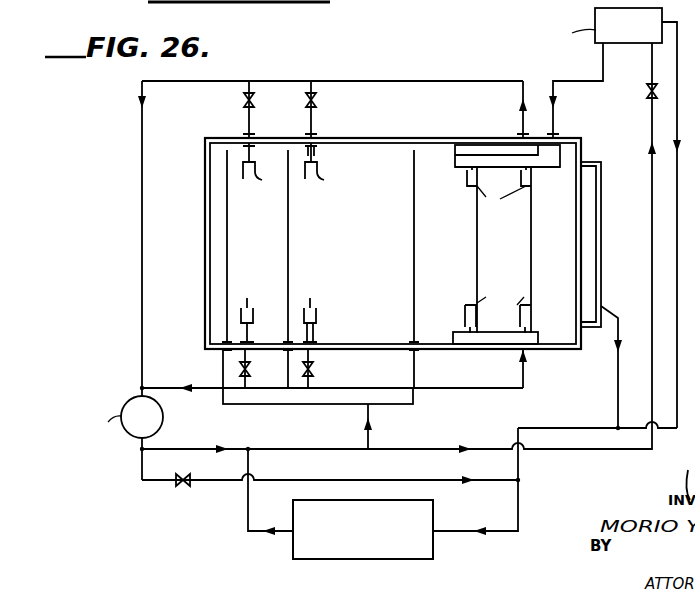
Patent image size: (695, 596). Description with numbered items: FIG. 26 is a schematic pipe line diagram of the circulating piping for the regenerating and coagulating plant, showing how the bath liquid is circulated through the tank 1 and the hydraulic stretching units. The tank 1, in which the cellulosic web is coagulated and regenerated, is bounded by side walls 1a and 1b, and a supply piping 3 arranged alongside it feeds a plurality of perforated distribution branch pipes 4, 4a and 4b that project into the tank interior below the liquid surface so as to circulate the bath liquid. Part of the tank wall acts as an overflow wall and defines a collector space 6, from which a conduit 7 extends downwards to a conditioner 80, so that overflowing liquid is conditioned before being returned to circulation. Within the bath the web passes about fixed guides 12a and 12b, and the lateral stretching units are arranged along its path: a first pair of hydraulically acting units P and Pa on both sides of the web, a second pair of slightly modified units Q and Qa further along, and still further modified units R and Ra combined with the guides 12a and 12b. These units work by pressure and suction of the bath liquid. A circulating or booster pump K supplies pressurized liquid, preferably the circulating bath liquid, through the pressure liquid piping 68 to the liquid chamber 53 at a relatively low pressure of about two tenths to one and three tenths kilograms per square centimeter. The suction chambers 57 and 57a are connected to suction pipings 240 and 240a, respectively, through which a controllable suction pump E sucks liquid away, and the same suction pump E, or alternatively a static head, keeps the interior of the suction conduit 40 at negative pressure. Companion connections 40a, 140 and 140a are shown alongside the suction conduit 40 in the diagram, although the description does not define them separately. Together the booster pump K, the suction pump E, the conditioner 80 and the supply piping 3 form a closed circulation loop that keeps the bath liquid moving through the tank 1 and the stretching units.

The tank 1 is at (390, 272).
The side wall 1a is at (382, 140).
The side wall 1b is at (374, 350).
The supply piping 3 is at (264, 396).
The perforated distribution branch pipe 4 is at (229, 222).
The perforated distribution branch pipe 4a is at (289, 230).
The perforated distribution branch pipe 4b is at (413, 217).
The collector space 6 is at (598, 224).
The conduit 7 is at (607, 311).
The guide 12a is at (476, 230).
The guide 12b is at (530, 230).
The suction conduit 40 is at (252, 126).
The outlet valve 40a is at (248, 363).
The liquid chamber 53 is at (467, 165).
The suction chamber 57 is at (471, 135).
The suction chamber 57a is at (510, 340).
The pressure liquid piping 68 is at (555, 127).
The conditioner 80 is at (393, 557).
The inlet valve 140 is at (314, 126).
The outlet valve 140a is at (311, 363).
The suction piping 240 is at (521, 120).
The suction piping 240a is at (524, 372).
The hydraulically acting lateral stretching unit P is at (255, 173).
The stretching unit Q is at (321, 173).
The stretching unit R is at (501, 203).
The hydraulically acting lateral stretching unit Pa is at (256, 286).
The stretching unit Qa is at (312, 306).
The stretching unit Ra is at (500, 302).
The booster pump K is at (562, 34).
The suction pump E is at (99, 407).